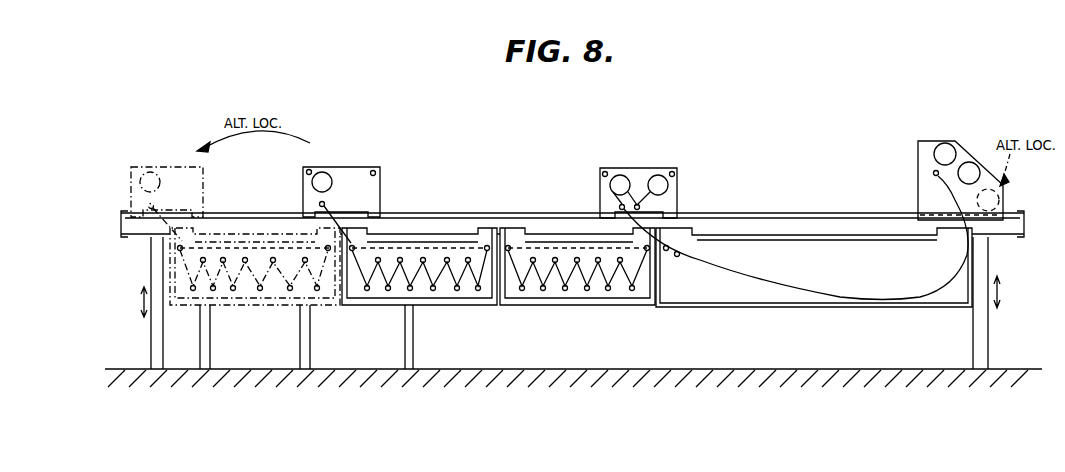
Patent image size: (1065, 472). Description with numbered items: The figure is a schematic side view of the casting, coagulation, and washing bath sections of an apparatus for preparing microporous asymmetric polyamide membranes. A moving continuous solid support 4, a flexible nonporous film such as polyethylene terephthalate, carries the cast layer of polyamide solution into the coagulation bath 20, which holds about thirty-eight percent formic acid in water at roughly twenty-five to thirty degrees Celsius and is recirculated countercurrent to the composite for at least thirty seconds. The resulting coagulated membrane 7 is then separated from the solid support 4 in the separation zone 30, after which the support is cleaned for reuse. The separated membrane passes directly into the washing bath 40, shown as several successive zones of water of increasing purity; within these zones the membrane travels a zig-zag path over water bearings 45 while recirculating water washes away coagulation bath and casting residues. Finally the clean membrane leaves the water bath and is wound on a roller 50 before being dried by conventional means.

The roller 50 is at (160, 172).
The washing bath 40 is at (236, 244).
The separation zone 30 is at (637, 177).
The continuous solid support 4 is at (698, 259).
The coagulation bath 20 is at (852, 254).
The water bearings 45 is at (543, 292).
The coagulated membrane 7 is at (647, 275).